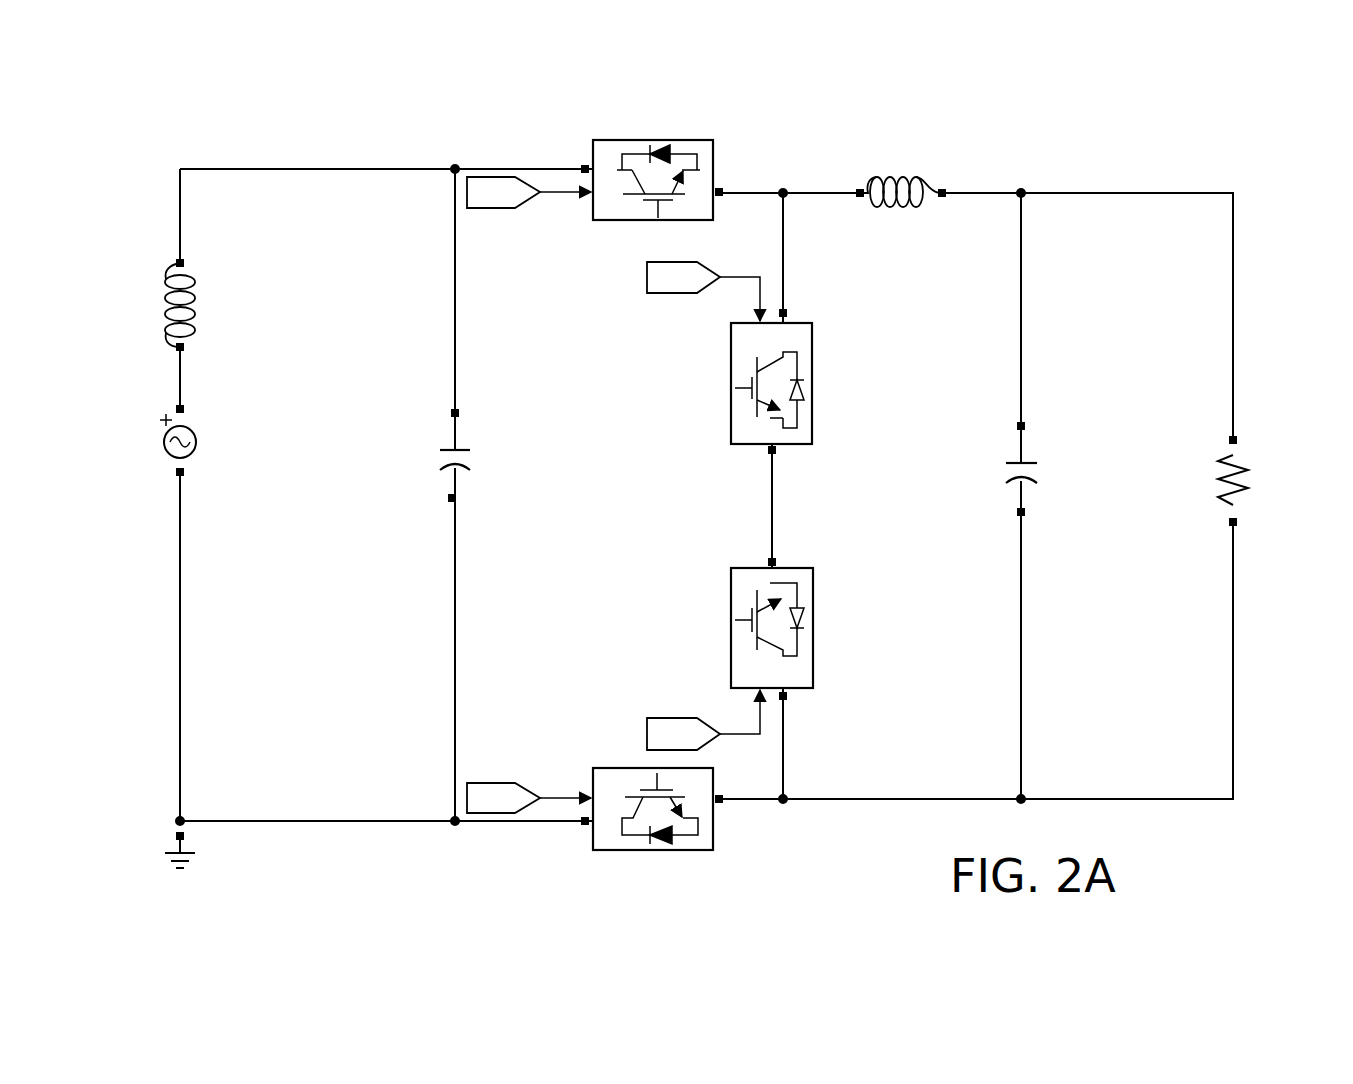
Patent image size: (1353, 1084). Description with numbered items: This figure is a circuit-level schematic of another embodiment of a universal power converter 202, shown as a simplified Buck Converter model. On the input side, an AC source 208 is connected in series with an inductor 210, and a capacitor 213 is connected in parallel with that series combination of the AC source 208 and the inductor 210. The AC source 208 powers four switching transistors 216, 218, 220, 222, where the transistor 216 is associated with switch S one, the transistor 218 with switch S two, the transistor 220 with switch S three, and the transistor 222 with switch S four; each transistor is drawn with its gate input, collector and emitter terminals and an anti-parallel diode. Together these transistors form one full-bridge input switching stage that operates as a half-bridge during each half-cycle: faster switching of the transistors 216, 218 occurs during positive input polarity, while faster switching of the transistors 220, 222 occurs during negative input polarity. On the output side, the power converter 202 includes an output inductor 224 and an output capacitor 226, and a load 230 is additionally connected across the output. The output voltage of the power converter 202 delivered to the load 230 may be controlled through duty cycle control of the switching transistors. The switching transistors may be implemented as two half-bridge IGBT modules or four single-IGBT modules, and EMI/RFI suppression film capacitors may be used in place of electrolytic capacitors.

The power converter 202 is at (224, 142).
The AC source 208 is at (163, 442).
The inductor 210 is at (170, 272).
The capacitor 213 is at (448, 448).
The transistor 216 is at (622, 222).
The transistor 218 is at (731, 418).
The transistor 220 is at (731, 602).
The transistor 222 is at (628, 768).
The output inductor 224 is at (893, 204).
The output capacitor 226 is at (1030, 462).
The load 230 is at (1236, 455).